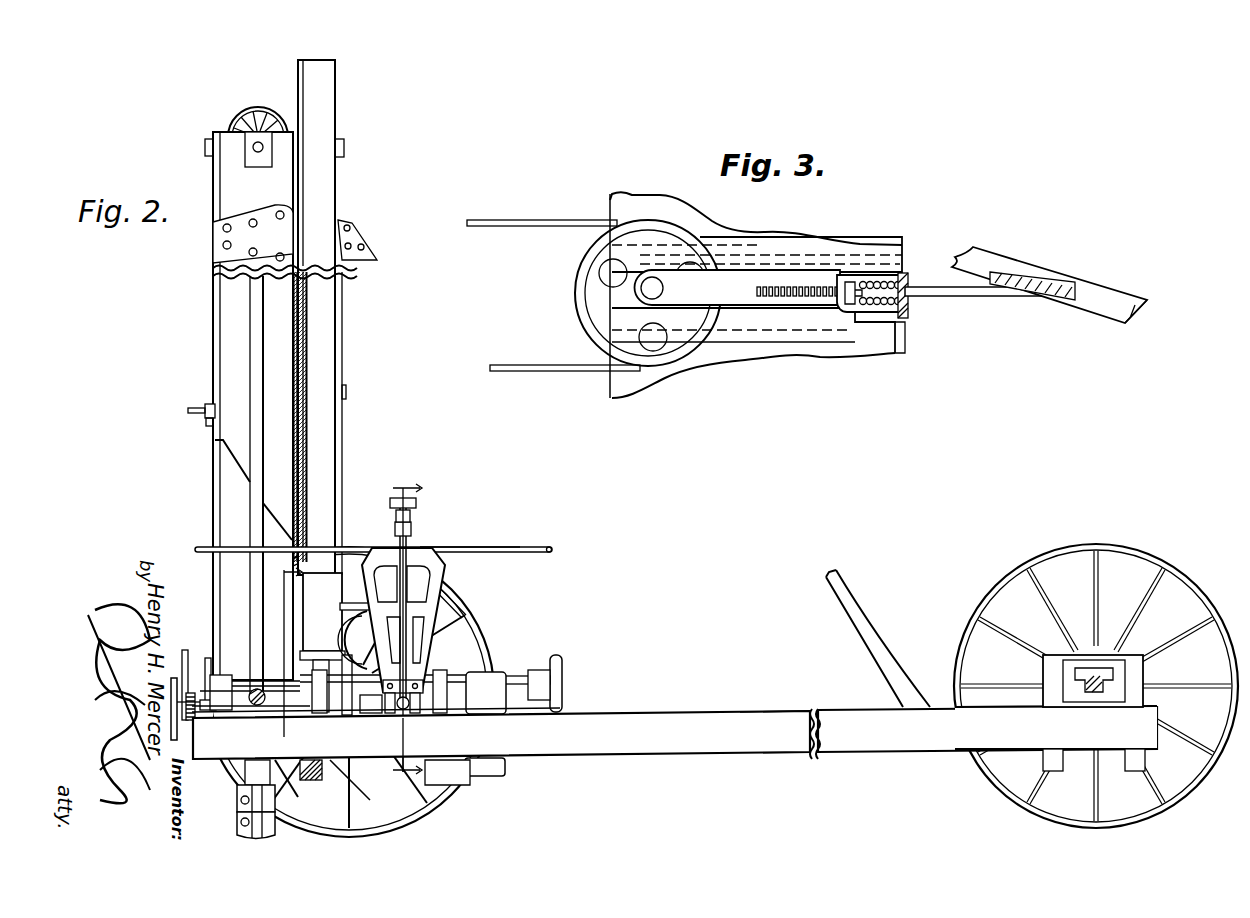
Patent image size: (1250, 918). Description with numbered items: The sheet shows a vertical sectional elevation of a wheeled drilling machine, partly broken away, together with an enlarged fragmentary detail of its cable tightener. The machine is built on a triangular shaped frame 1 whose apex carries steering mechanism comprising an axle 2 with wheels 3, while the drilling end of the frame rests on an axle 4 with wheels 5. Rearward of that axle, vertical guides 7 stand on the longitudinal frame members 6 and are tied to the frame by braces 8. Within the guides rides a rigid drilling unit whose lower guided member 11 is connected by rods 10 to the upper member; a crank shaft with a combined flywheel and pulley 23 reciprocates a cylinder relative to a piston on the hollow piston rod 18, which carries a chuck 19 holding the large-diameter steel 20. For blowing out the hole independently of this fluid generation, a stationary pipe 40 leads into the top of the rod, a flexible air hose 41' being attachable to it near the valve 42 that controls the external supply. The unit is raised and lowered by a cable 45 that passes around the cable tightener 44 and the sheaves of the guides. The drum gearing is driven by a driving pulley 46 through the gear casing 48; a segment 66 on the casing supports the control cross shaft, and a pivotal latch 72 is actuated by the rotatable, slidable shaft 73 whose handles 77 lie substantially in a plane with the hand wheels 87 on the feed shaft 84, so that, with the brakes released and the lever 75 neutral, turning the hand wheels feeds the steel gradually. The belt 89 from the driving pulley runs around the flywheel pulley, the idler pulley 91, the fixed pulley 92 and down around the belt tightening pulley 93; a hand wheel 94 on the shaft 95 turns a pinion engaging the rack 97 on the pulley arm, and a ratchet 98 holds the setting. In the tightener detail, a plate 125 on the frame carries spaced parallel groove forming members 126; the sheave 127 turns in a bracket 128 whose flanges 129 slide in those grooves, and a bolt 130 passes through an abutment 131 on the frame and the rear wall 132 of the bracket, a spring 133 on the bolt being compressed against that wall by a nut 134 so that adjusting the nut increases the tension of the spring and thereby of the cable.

In FIG. 2, the triangular shaped frame 1 is at (660, 712).
In FIG. 3, the triangular shaped frame 1 is at (1104, 290).
In FIG. 2, the axle 2 is at (1105, 672).
In FIG. 2, the wheels 3 is at (1100, 546).
In FIG. 2, the axle 4 is at (290, 778).
In FIG. 2, the wheels 5 is at (452, 632).
In FIG. 2, the longitudinal frame members 6 is at (764, 711).
In FIG. 2, the vertical guides 7 is at (218, 318).
In FIG. 2, the braces 8 is at (852, 592).
In FIG. 2, the rods 10 is at (424, 635).
In FIG. 2, the lower guided member 11 is at (279, 660).
In FIG. 2, the piston rod 18 is at (248, 765).
In FIG. 2, the chuck 19 is at (238, 805).
In FIG. 2, the steel 20 is at (242, 832).
In FIG. 2, the combined flywheel and pulley 23 is at (342, 362).
In FIG. 2, the stationary pipe 40 is at (221, 441).
In FIG. 2, the flexible air hose 41' is at (188, 401).
In FIG. 2, the valve 42 is at (207, 424).
In FIG. 3, the cable tightener 44 is at (668, 374).
In FIG. 3, the cable 45 is at (582, 222).
In FIG. 2, the driving pulley 46 is at (478, 774).
In FIG. 2, the gear casing 48 is at (375, 693).
In FIG. 2, the segment 66 is at (433, 579).
In FIG. 2, the pivotal latch 72 is at (396, 516).
In FIG. 2, the shaft 73 is at (463, 546).
In FIG. 2, the lever 75 is at (408, 542).
In FIG. 2, the handles 77 is at (552, 549).
In FIG. 2, the shaft 84 is at (232, 690).
In FIG. 2, the hand wheels 87 is at (212, 668).
In FIG. 2, the belt 89 is at (320, 291).
In FIG. 2, the idler pulley 91 is at (338, 520).
In FIG. 2, the fixed pulley 92 is at (337, 104).
In FIG. 2, the belt tightening pulley 93 is at (325, 583).
In FIG. 2, the hand wheel 94 is at (175, 677).
In FIG. 2, the shaft 95 is at (287, 718).
In FIG. 2, the rack 97 is at (342, 660).
In FIG. 2, the ratchet 98 is at (190, 692).
In FIG. 3, the plate 125 is at (738, 356).
In FIG. 3, the groove forming members 126 is at (775, 250).
In FIG. 3, the sheave 127 is at (597, 293).
In FIG. 3, the bracket 128 is at (815, 305).
In FIG. 3, the flanges 129 is at (906, 322).
In FIG. 3, the bolt 130 is at (960, 293).
In FIG. 3, the abutment 131 is at (1040, 272).
In FIG. 3, the rear wall 132 is at (906, 275).
In FIG. 3, the spring 133 is at (872, 270).
In FIG. 3, the nut 134 is at (850, 282).